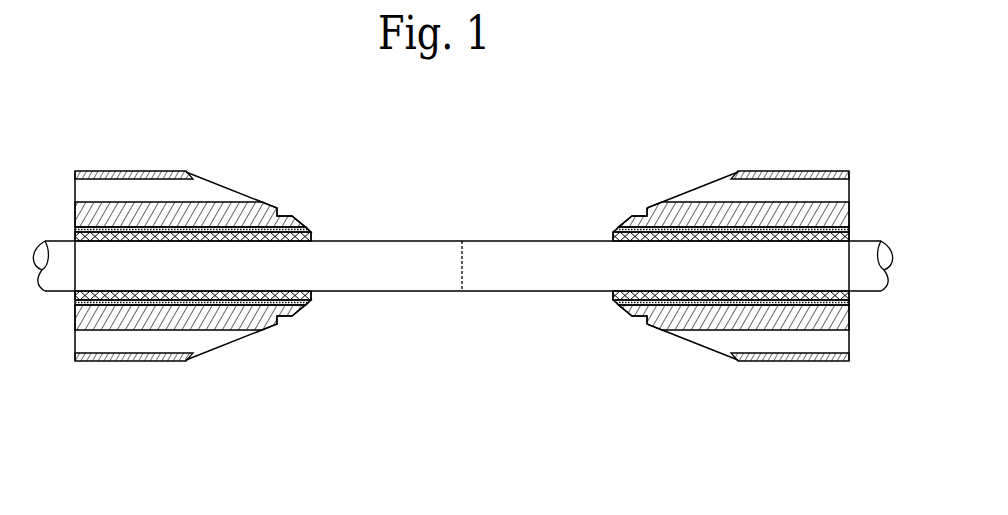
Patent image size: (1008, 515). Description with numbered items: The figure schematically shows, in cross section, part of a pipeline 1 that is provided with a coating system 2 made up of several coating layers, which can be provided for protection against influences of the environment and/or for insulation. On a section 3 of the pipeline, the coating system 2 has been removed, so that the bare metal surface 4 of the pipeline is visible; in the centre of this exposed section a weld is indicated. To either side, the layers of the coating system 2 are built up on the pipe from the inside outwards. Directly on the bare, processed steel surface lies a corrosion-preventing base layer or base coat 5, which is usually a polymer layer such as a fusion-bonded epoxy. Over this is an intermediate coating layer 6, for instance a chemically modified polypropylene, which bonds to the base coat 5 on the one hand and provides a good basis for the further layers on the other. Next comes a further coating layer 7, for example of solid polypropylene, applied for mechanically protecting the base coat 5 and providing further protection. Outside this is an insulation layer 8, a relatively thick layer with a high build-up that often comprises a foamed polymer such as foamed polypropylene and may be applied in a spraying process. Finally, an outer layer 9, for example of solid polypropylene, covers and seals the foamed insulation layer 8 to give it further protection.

The pipeline 1 is at (819, 116).
The coating system 2 is at (834, 170).
The section of the pipeline 3 is at (334, 333).
The metal surface 4 is at (490, 282).
The corrosion-preventing base layer 5 is at (612, 240).
The intermediate coating layer 6 is at (612, 232).
The further coating layer 7 is at (630, 227).
The insulation layer 8 is at (703, 190).
The outer layer 9 is at (742, 173).